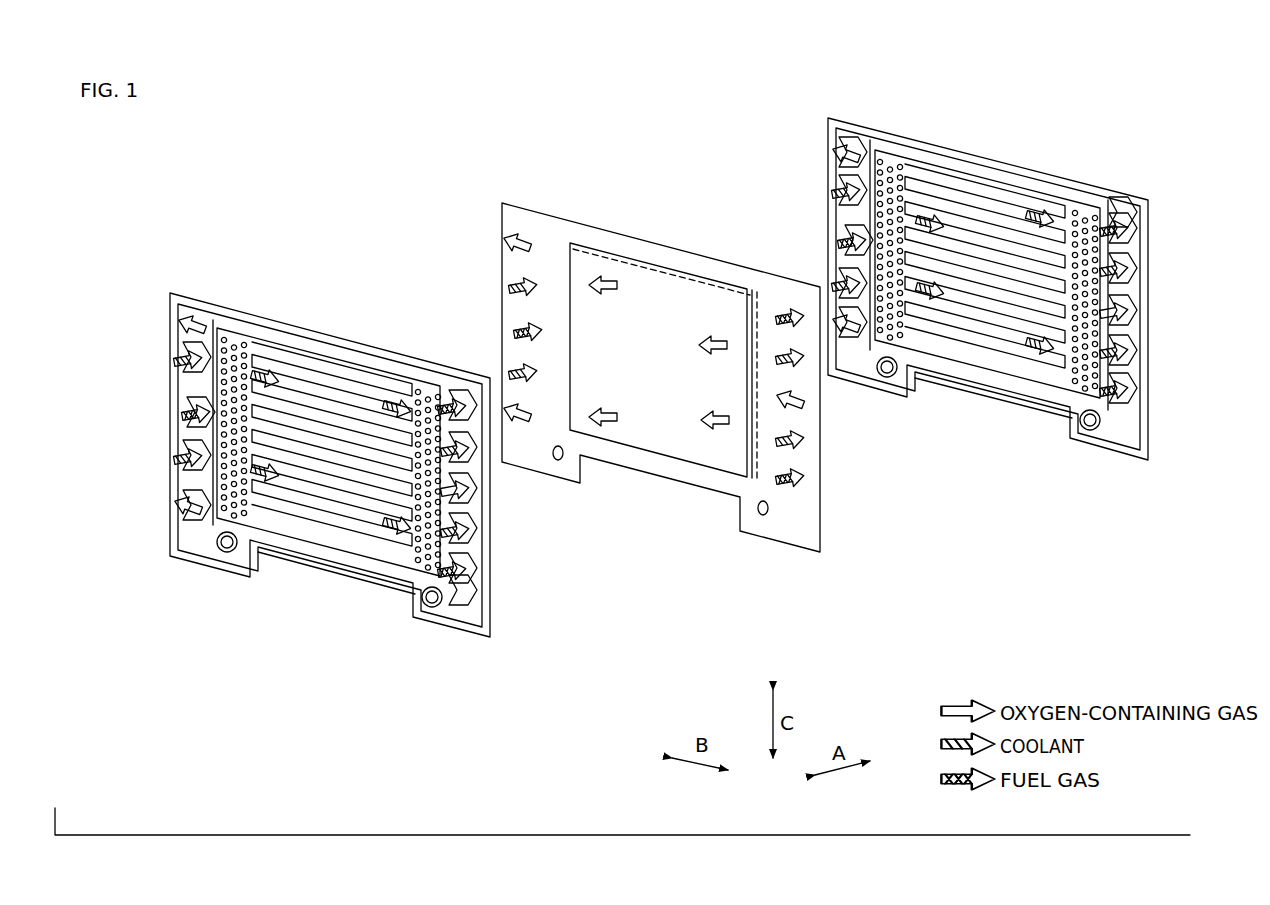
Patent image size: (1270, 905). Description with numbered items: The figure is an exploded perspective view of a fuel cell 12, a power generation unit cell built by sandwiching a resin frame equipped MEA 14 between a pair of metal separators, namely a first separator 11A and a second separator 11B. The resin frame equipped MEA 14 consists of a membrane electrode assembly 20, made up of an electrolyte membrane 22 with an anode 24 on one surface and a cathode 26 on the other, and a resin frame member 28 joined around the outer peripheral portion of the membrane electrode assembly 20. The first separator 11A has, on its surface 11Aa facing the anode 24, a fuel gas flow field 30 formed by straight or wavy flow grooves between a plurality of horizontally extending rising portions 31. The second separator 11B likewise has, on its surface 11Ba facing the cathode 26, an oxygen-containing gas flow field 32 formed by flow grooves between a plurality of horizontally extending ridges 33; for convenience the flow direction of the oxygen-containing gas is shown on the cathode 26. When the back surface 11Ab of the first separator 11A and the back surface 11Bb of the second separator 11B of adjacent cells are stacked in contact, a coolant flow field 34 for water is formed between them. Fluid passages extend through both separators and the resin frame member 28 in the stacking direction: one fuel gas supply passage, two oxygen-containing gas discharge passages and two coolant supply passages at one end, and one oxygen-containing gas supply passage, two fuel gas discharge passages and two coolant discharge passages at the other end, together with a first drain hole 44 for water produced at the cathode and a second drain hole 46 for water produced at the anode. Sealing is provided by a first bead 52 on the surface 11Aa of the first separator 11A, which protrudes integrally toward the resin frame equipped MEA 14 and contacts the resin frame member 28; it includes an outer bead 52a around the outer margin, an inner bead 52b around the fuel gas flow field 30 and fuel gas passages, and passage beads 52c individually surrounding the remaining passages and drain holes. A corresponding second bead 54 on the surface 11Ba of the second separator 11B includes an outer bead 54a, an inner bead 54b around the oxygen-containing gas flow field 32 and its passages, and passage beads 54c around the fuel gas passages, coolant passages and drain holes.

The first separator 11A is at (825, 148).
The surface of the first separator 11Aa is at (1135, 440).
The surface of the first separator 11Ab is at (1130, 425).
The second separator 11B is at (166, 290).
The surface of the second separator 11Ba is at (476, 612).
The surface of the second separator 11Bb is at (465, 606).
The fuel cell 12 is at (268, 167).
The resin frame equipped membrane electrode assembly 14 is at (672, 146).
The membrane electrode assembly 20 is at (652, 255).
The electrolyte membrane 22 is at (612, 247).
The anode 24 is at (675, 450).
The cathode 26 is at (652, 445).
The resin frame member 28 is at (568, 235).
The fuel gas flow field 30 is at (993, 185).
The rising portions 31 is at (1032, 200).
The oxygen-containing gas flow field 32 is at (352, 395).
The ridges 33 is at (390, 398).
The coolant flow field 34 is at (309, 385).
The first drain hole 44 is at (227, 553).
The second drain hole 46 is at (428, 607).
The first bead 52 is at (1007, 392).
The outer bead 52a is at (1030, 392).
The inner bead 52b is at (974, 366).
The passage beads 52c is at (860, 186).
The second bead 54 is at (350, 578).
The outer bead 54a is at (384, 585).
The inner bead 54b is at (308, 572).
The passage beads 54c is at (205, 386).